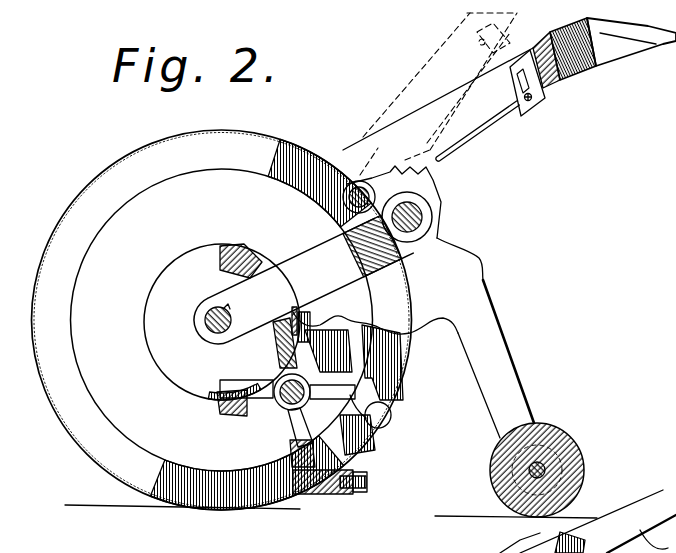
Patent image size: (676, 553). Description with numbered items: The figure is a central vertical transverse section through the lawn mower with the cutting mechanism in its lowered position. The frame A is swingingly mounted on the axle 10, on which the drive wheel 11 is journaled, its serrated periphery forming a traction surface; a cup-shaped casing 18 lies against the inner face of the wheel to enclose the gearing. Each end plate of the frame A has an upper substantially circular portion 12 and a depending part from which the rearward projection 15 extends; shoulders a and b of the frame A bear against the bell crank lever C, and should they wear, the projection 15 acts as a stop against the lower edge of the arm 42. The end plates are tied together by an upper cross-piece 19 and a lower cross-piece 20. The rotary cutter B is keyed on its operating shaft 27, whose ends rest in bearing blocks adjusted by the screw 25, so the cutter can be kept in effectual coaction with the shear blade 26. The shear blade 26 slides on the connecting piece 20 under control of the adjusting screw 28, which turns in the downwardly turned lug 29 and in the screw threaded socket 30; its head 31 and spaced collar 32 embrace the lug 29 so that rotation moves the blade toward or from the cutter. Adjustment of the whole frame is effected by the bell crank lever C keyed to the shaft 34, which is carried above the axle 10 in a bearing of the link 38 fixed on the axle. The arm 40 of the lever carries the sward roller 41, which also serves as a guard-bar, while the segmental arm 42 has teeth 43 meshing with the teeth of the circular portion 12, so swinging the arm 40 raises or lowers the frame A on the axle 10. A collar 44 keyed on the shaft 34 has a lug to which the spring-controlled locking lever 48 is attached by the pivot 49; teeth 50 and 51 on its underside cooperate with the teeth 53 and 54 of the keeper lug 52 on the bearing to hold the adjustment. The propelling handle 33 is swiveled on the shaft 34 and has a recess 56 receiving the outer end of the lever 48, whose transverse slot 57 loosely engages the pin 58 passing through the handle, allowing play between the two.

The axle 10 is at (210, 325).
The drive wheel 11 is at (97, 190).
The upper substantially circular portion 12 is at (175, 266).
The rearward projection 15 is at (390, 420).
The cup-shaped casing 18 is at (70, 278).
The upper cross-piece 19 is at (247, 249).
The lower cross-piece 20 is at (333, 500).
The adjustable element 25 is at (320, 362).
The shear blade 26 is at (340, 470).
The operating shaft 27 is at (302, 402).
The adjusting screw 28 is at (320, 497).
The downwardly turned lug 29 is at (365, 478).
The screw threaded socket 30 is at (300, 495).
The head 31 is at (368, 493).
The collar 32 is at (343, 494).
The propelling handle 33 is at (607, 40).
The shaft 34 is at (414, 226).
The link 38 is at (299, 281).
The arm 40 is at (523, 390).
The sward roller 41 is at (577, 434).
The arm 42 is at (356, 376).
The teeth 43 is at (305, 317).
The collar 44 is at (406, 233).
The locking lever 48 is at (410, 127).
The pivot 49 is at (347, 178).
The tooth 50 is at (407, 170).
The tooth 51 is at (440, 170).
The keeper lug 52 is at (441, 183).
The tooth 53 is at (440, 177).
The tooth 54 is at (429, 203).
The recess 56 is at (524, 58).
The transverse slot 57 is at (518, 86).
The pin 58 is at (546, 99).
The frame A is at (177, 368).
The rotary cutter B is at (288, 452).
The bell crank lever C is at (467, 265).
The shoulder a is at (330, 352).
The shoulder b is at (357, 323).